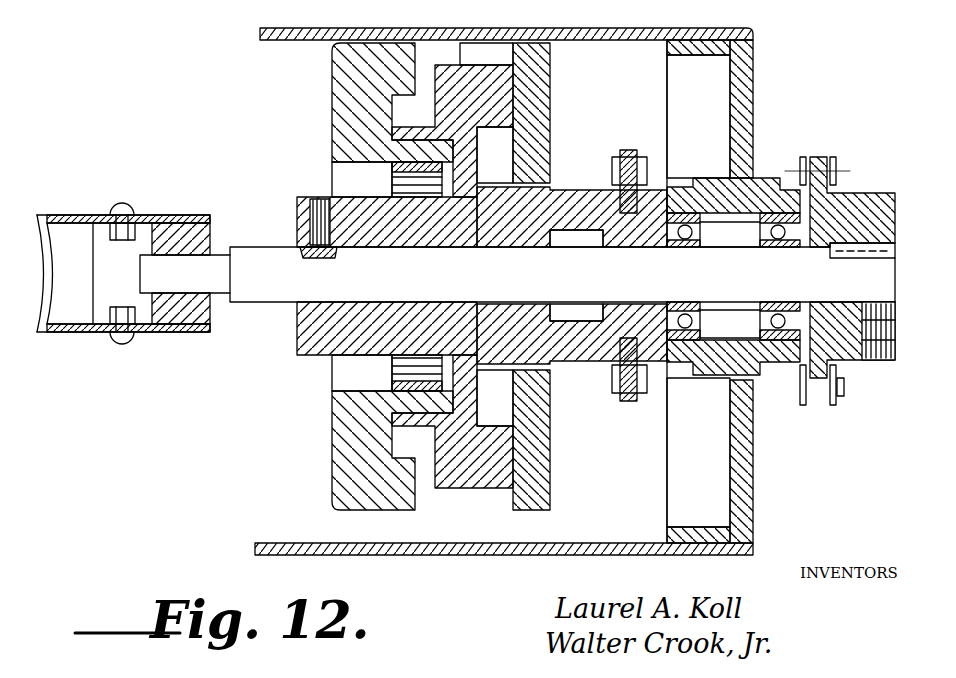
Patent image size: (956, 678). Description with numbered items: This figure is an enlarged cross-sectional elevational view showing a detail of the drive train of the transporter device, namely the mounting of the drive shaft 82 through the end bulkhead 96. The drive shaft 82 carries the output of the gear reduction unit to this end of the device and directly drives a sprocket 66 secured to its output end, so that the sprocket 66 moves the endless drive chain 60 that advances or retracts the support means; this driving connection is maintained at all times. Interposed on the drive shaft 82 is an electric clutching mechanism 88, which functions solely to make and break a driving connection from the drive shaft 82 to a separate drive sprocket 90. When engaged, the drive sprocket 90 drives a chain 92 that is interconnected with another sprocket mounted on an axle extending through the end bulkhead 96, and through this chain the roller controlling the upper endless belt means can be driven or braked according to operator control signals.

The endless drive chain 60 is at (838, 167).
The sprocket wheel 66 is at (814, 160).
The drive shaft 82 is at (66, 335).
The electric clutching mechanism 88 is at (322, 427).
The drive sprocket 90 is at (622, 398).
The chain 92 is at (655, 141).
The end bulkhead 96 is at (748, 480).